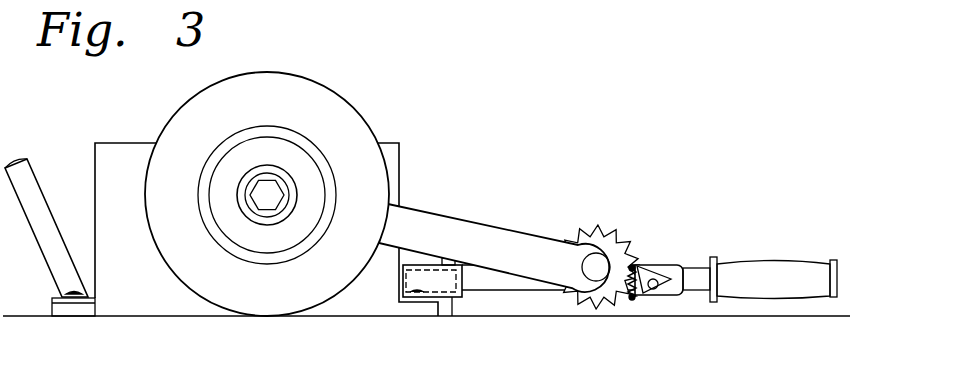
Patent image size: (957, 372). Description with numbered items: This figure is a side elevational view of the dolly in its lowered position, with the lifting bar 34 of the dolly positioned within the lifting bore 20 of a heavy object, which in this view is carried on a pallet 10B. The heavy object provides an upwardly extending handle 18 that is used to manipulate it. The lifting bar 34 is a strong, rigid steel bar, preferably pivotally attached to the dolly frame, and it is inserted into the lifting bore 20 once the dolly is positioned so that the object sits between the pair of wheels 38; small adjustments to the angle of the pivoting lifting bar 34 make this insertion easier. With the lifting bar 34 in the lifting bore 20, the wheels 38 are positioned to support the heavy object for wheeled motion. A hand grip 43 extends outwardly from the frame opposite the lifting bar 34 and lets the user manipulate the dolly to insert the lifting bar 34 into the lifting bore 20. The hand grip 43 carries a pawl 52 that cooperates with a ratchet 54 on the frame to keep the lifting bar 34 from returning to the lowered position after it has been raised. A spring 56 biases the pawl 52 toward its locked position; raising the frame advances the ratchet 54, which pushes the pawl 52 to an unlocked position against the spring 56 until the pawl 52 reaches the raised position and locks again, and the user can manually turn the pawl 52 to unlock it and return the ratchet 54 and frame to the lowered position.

The pallet 10B is at (114, 150).
The upwardly extending handle 18 is at (40, 188).
The lifting bore 20 is at (452, 298).
The lifting bar 34 is at (512, 285).
The wheels 38 is at (320, 103).
The hand grip 43 is at (783, 267).
The pawl 52 is at (652, 265).
The ratchet 54 is at (598, 232).
The spring 56 is at (636, 300).